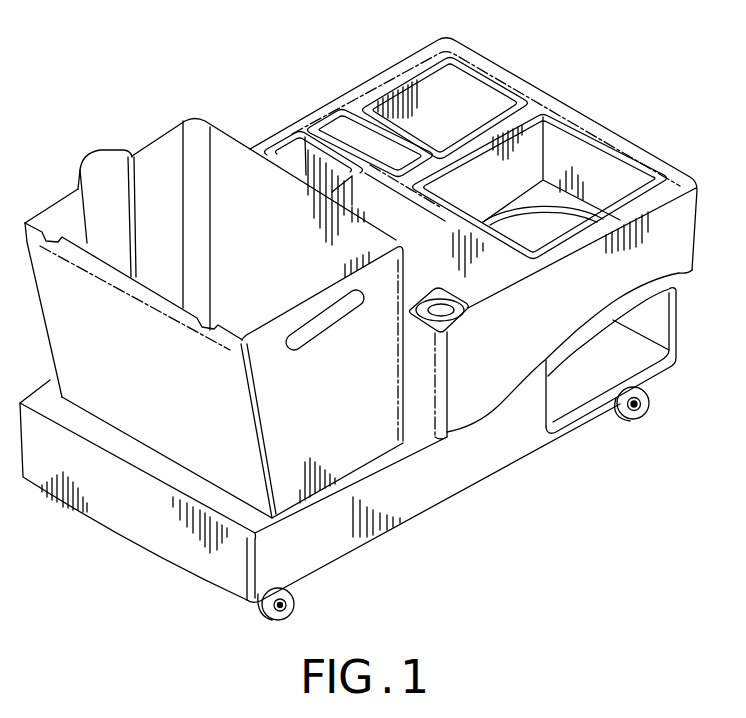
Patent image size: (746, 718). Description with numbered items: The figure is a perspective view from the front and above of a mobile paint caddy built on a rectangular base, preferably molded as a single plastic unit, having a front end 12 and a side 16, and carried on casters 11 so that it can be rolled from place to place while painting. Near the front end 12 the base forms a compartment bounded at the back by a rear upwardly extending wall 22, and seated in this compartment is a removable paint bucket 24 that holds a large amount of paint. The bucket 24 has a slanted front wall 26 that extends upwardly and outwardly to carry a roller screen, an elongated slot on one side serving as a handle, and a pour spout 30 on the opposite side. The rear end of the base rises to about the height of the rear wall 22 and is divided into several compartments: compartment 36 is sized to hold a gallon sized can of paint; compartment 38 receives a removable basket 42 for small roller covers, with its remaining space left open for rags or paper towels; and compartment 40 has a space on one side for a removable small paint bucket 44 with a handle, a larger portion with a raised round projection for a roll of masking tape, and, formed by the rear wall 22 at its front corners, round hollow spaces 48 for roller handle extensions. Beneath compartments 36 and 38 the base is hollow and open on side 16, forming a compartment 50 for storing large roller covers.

The casters 11 is at (297, 601).
The front end 12 is at (183, 550).
The side 16 is at (393, 502).
The rear upwardly extending wall 22 is at (425, 390).
The removable paint bucket 24 is at (230, 133).
The slanted front wall 26 is at (158, 380).
The pour spout 30 is at (103, 150).
The compartment 36 is at (589, 163).
The compartment 38 is at (470, 97).
The compartment 40 is at (437, 247).
The removable basket 42 is at (352, 133).
The removable small paint bucket 44 is at (288, 162).
The round hollow spaces 48 is at (437, 307).
The compartment 50 is at (623, 342).